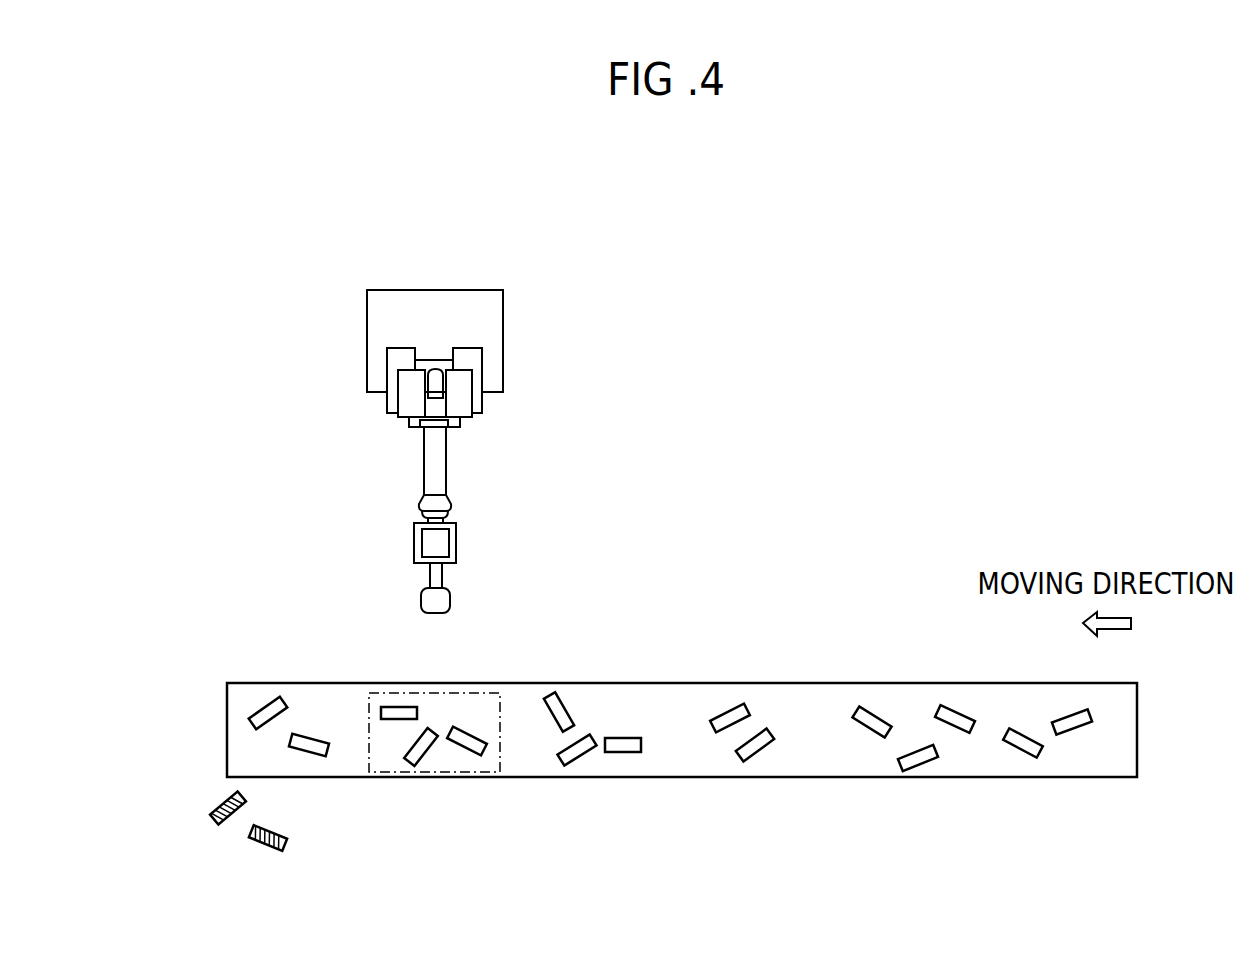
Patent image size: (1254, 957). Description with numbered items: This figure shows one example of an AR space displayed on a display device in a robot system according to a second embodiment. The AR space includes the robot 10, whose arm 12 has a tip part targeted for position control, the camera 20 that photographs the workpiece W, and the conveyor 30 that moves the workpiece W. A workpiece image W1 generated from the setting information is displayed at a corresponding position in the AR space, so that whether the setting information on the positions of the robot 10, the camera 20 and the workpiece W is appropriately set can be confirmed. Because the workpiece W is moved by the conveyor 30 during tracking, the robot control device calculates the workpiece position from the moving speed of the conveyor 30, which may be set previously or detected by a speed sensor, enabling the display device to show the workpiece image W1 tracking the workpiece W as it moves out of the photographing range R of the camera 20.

The robot 10 is at (367, 336).
The arm 12 is at (414, 542).
The camera 20 is at (421, 600).
The conveyor 30 is at (731, 683).
The workpiece W is at (306, 733).
The workpiece image W1 is at (250, 833).
The photographing range R is at (478, 772).